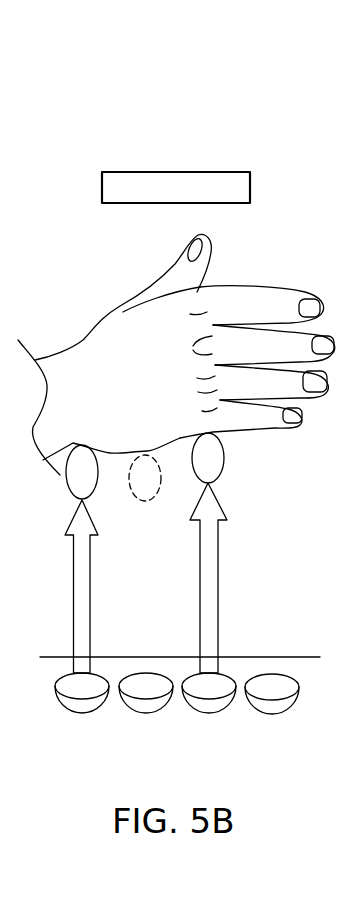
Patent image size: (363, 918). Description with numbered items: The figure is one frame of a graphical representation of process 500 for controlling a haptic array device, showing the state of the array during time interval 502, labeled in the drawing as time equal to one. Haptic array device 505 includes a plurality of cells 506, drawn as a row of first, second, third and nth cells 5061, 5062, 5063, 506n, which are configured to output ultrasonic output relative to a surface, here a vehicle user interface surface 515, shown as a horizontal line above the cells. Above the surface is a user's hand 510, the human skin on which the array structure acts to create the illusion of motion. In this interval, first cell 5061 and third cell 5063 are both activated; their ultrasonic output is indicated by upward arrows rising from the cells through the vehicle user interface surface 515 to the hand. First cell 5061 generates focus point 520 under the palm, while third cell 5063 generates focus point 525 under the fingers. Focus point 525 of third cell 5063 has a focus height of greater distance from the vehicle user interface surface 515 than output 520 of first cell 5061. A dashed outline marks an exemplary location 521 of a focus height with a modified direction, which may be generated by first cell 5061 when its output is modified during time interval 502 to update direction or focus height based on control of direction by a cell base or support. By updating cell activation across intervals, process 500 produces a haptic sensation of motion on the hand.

The process 500 is at (77, 136).
The time interval 502 is at (175, 162).
The haptic array device 505 is at (312, 697).
The cells 506 is at (163, 733).
The first cell 5061 is at (70, 713).
The second cell 5062 is at (145, 713).
The third cell 5063 is at (207, 713).
The nth cell 506n is at (275, 713).
The user's hand 510 is at (103, 330).
The vehicle user interface surface 515 is at (55, 657).
The focus point 520 is at (67, 484).
The location 521 is at (134, 462).
The focus point 525 is at (225, 462).